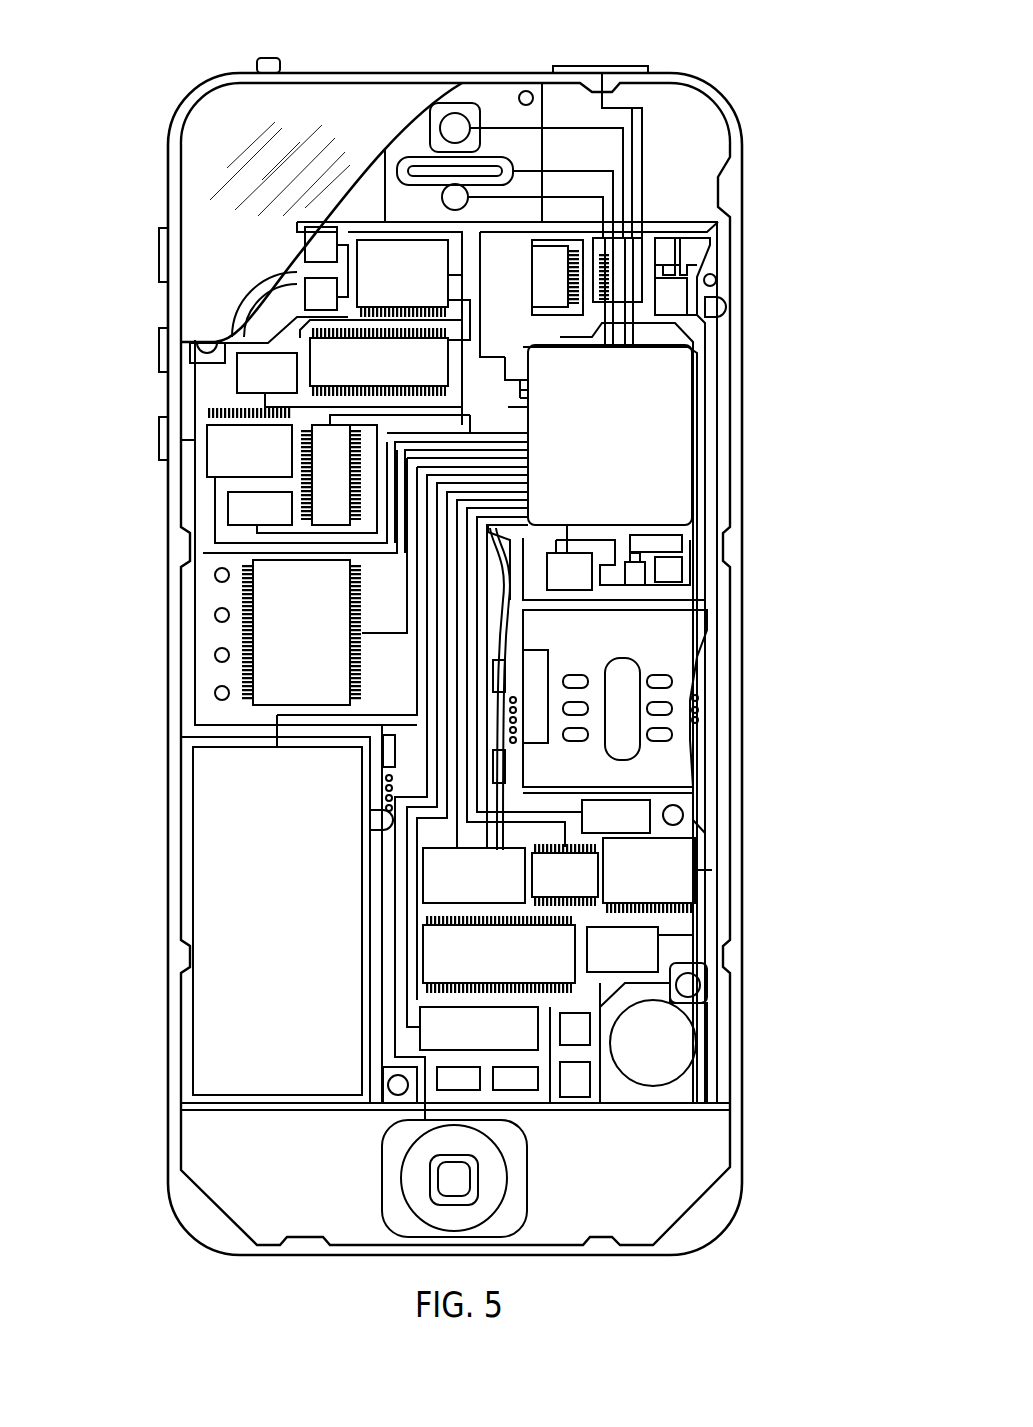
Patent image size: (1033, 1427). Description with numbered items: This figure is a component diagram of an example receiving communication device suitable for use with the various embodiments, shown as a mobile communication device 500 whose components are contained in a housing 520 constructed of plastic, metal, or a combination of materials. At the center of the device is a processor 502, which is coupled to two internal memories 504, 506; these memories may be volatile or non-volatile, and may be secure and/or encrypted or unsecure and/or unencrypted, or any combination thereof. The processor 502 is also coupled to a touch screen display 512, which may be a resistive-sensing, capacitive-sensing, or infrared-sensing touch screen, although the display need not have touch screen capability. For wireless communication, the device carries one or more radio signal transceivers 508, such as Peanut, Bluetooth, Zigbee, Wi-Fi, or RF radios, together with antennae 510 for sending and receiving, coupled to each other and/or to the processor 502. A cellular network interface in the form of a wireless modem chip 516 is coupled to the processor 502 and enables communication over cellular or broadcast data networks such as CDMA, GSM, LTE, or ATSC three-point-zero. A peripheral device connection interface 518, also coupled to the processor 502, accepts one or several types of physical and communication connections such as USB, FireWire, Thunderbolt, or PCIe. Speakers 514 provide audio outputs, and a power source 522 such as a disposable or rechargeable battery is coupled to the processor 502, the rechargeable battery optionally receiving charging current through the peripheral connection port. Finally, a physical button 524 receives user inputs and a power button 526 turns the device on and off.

The mobile communication device 500 is at (118, 60).
The processor 502 is at (610, 435).
The internal memory 504 is at (402, 276).
The internal memory 506 is at (379, 362).
The radio signal transceiver 508 is at (630, 253).
The antenna 510 is at (687, 293).
The touch screen display 512 is at (205, 172).
The speaker 514 is at (400, 160).
The wireless modem chip 516 is at (499, 954).
The peripheral device connection interface 518 is at (479, 1028).
The housing 520 is at (742, 1128).
The power source 522 is at (277, 921).
The physical button 524 is at (462, 1188).
The power button 526 is at (600, 66).